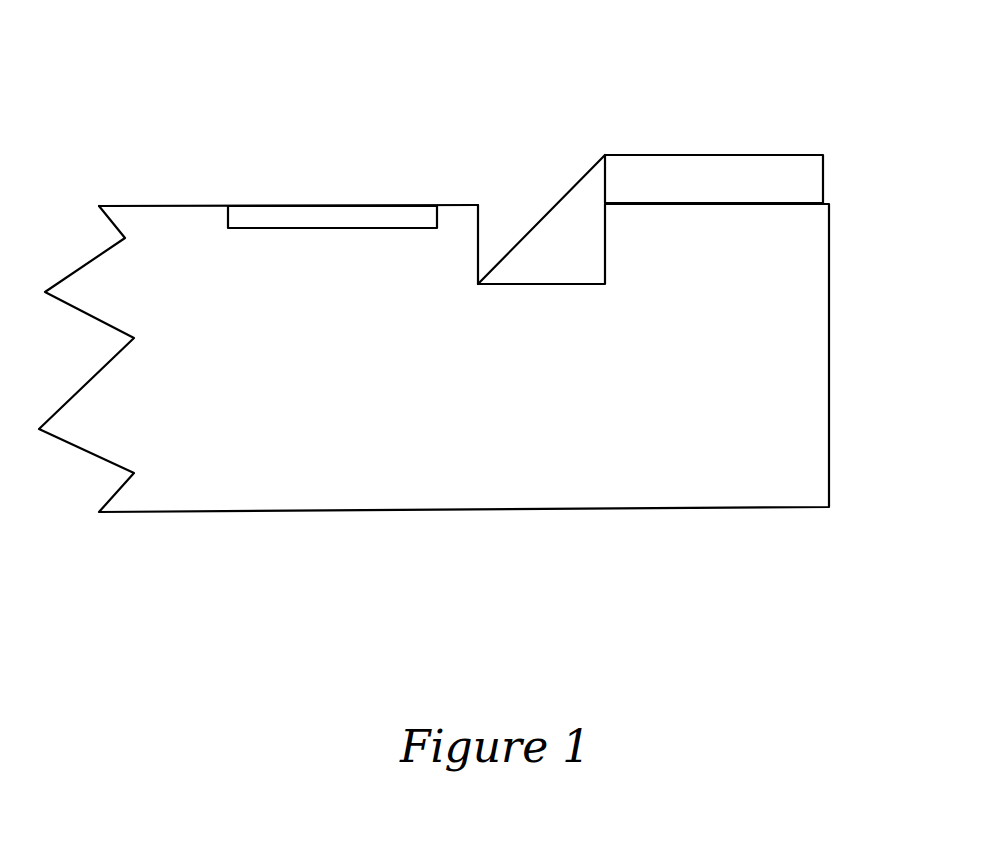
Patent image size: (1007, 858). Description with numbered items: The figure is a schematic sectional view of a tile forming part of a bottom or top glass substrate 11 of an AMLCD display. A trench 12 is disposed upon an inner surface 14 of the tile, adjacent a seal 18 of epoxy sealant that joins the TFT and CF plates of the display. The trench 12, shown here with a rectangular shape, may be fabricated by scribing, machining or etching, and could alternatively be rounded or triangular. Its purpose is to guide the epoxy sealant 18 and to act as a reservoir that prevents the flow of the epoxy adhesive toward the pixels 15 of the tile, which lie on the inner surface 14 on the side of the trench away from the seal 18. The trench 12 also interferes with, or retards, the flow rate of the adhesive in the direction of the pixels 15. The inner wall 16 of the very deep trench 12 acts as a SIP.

The glass substrate 11 is at (830, 270).
The trench 12 is at (567, 218).
The inner surface 14 is at (193, 206).
The pixels 15 is at (368, 204).
The inner wall 16 is at (478, 204).
The seal 18 is at (692, 155).